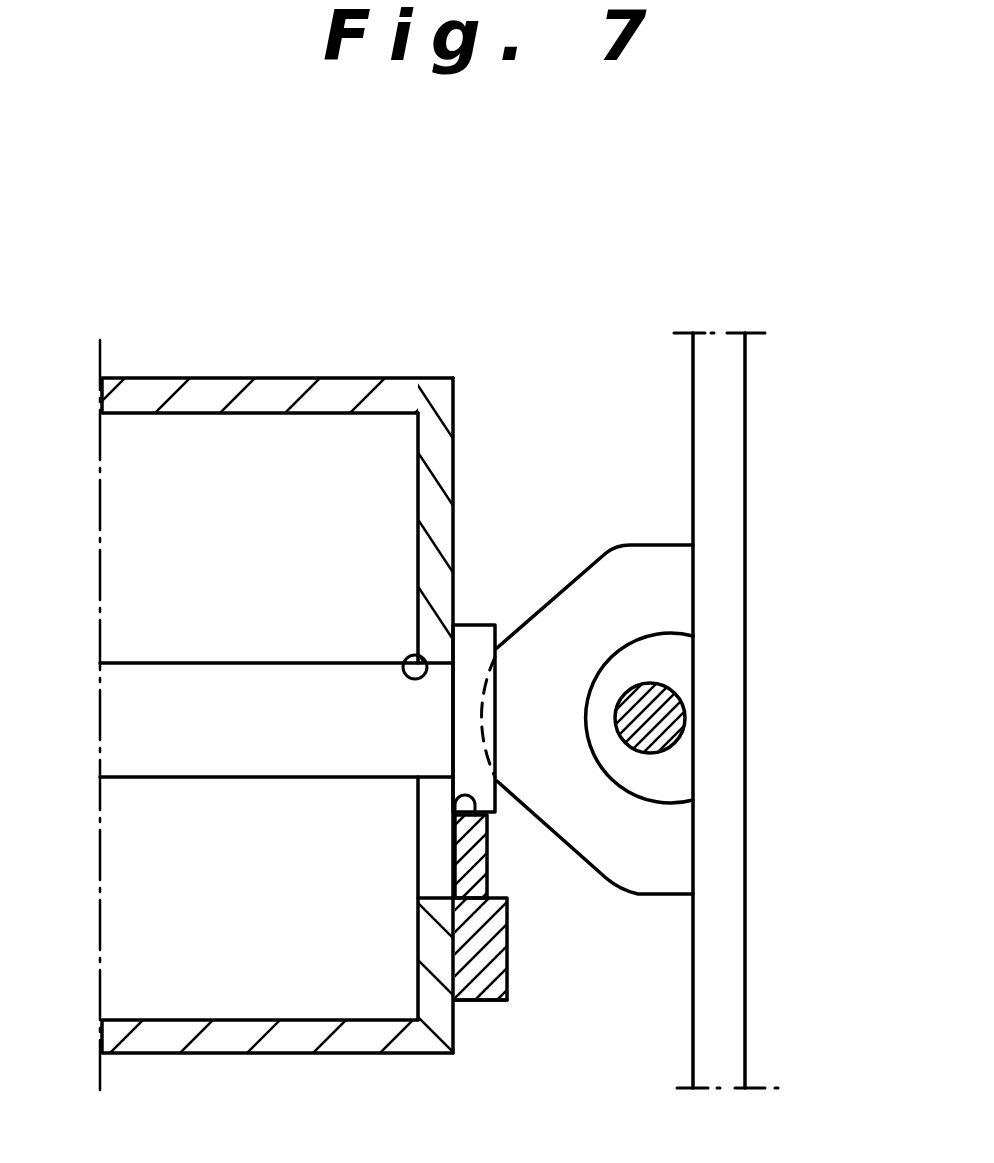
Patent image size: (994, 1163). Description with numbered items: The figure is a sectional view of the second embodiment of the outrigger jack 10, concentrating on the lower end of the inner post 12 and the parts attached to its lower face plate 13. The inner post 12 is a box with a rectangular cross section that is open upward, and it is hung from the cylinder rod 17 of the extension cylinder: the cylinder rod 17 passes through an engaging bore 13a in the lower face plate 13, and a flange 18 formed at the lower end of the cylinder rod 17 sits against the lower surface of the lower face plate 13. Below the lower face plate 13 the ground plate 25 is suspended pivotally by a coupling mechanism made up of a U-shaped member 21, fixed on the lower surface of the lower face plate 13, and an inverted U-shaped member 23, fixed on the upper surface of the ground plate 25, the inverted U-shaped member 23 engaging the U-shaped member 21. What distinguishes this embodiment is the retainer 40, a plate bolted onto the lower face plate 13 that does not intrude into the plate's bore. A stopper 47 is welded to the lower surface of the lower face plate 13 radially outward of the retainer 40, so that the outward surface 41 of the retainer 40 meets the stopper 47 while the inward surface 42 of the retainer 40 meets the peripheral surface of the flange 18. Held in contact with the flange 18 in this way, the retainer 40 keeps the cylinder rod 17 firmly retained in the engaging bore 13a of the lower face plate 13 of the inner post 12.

The outrigger jack 10 is at (578, 317).
The inner post 12 is at (320, 378).
The lower face plate 13 is at (460, 430).
The engaging bore 13a is at (404, 664).
The cylinder rod 17 is at (203, 690).
The flange 18 is at (473, 623).
The U-shaped member 21 is at (685, 717).
The inverted U-shaped member 23 is at (630, 570).
The ground plate 25 is at (723, 445).
The retainer 40 is at (488, 857).
The outward surface 41 is at (483, 917).
The inward surface 42 is at (455, 800).
The stopper 47 is at (480, 993).